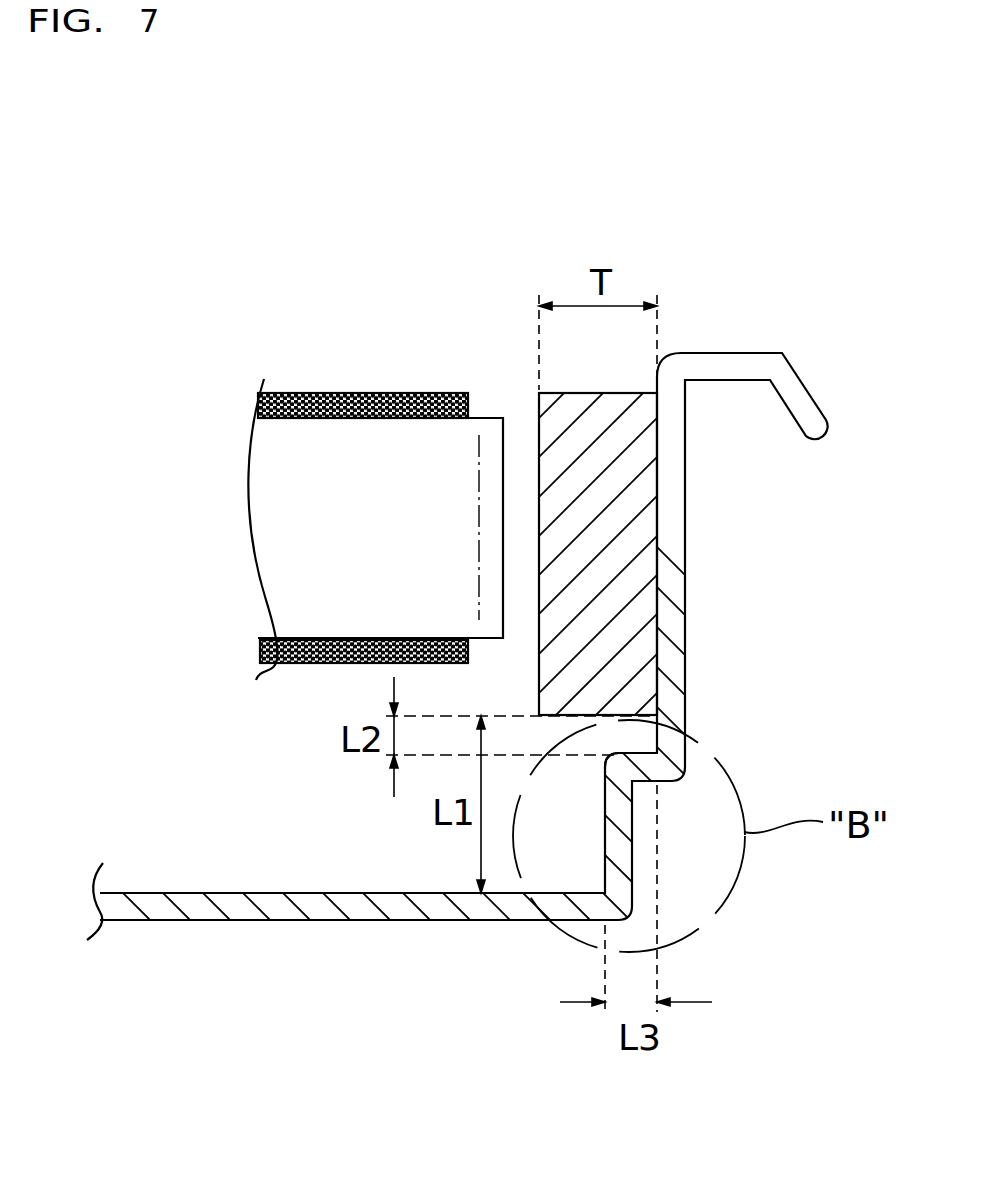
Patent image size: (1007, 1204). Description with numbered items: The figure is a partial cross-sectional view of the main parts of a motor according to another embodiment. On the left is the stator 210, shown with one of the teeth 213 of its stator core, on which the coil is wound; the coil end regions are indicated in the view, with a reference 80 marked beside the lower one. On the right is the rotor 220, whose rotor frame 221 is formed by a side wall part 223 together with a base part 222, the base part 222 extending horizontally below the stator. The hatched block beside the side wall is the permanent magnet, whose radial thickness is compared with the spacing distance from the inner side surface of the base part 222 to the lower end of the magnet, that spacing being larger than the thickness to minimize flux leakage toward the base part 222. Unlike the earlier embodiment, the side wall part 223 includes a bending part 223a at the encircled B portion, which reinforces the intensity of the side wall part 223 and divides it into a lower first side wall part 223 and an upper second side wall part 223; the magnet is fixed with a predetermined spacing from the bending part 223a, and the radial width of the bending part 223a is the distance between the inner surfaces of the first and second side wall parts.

The cushion member 80 is at (330, 666).
The stator 210 is at (339, 514).
The teeth 213 is at (262, 449).
The rotor 220 is at (503, 708).
The rotor frame 221 is at (387, 925).
The base part 222 is at (317, 908).
The side wall part 223 is at (672, 552).
The bending part 223a is at (607, 724).